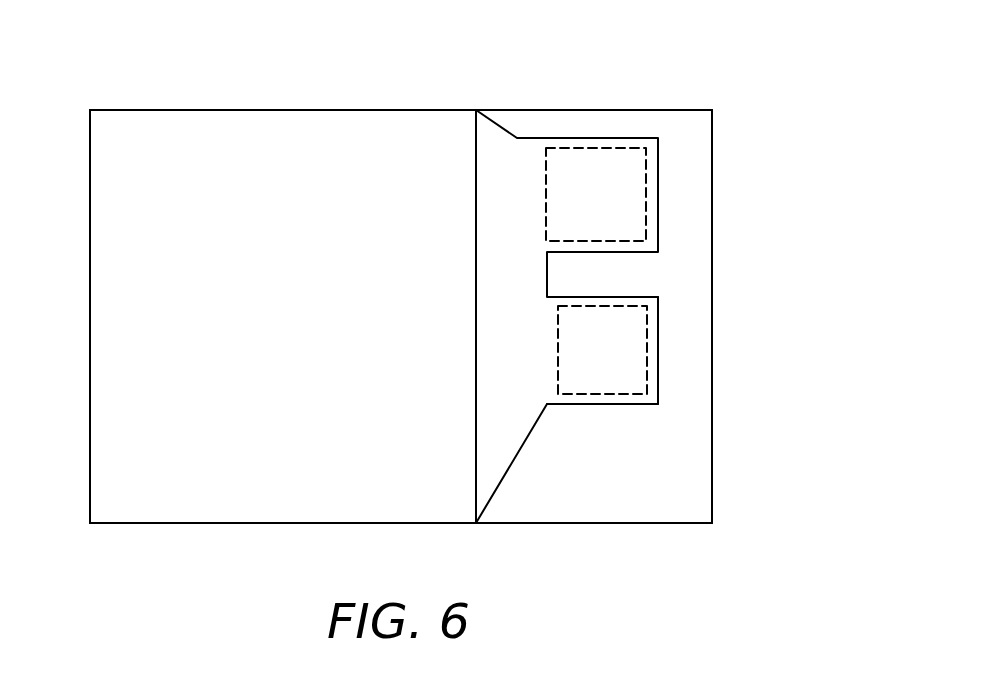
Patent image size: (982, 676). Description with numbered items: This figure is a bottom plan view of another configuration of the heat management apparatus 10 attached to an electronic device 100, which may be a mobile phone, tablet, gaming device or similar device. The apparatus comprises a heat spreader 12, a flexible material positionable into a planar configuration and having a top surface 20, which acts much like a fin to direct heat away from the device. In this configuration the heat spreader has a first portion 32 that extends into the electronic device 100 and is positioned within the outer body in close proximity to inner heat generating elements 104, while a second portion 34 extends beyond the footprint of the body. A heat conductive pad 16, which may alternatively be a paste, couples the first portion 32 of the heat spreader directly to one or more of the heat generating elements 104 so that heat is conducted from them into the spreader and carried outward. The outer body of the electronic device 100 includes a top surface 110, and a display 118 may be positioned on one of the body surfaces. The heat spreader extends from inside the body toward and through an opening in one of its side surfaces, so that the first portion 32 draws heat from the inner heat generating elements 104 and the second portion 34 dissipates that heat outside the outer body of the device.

The heat management apparatus 10 is at (286, 98).
The heat spreader 12 is at (336, 98).
The heat conductive pad 16 is at (646, 189).
The top surface 20 is at (104, 477).
The first portion 32 is at (520, 152).
The second portion 34 is at (404, 126).
The electronic device 100 is at (720, 68).
The inner heat generating elements 104 is at (646, 163).
The top surface 110 is at (725, 224).
The display 118 is at (690, 452).